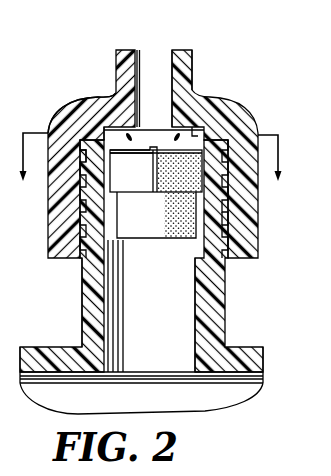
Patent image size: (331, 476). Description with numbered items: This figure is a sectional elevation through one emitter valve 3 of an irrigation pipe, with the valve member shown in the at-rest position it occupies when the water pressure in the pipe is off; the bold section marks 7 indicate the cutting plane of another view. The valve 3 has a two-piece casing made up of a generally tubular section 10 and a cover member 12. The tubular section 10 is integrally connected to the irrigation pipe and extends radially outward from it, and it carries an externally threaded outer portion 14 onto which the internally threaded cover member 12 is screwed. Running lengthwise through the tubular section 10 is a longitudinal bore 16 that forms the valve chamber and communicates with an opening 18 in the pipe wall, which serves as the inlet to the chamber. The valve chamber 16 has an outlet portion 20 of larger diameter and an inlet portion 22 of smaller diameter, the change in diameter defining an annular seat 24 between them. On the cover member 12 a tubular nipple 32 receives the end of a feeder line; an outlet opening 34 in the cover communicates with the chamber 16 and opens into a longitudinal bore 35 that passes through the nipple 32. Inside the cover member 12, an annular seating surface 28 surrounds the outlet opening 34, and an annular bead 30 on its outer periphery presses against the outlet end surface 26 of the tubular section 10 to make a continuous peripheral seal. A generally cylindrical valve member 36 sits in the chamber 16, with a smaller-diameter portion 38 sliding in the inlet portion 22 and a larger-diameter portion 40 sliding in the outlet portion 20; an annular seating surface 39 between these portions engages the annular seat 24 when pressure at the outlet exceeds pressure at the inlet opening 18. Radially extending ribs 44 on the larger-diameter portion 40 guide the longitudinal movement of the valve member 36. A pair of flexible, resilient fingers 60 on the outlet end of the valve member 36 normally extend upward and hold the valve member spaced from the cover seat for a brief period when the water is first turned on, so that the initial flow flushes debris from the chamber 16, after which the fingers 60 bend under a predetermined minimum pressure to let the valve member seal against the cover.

The valve 3 is at (236, 78).
The section line 7- 7 is at (159, 182).
The tubular section 10 is at (81, 305).
The cover member 12 is at (231, 110).
The externally threaded outer portion 14 is at (253, 247).
The longitudinal bore 16 is at (160, 315).
The opening 18 is at (141, 393).
The outlet portion 20 is at (198, 130).
The inlet portion 22 is at (133, 265).
The annular seat 24 is at (193, 216).
The outlet end surface 26 is at (98, 135).
The annular seating surface 28 is at (117, 150).
The annular bead 30 is at (127, 150).
The tubular nipple 32 is at (191, 57).
The outlet opening 34 is at (171, 48).
The longitudinal bore 35 is at (141, 50).
The valve member 36 is at (207, 217).
The smaller-diameter portion 38 is at (173, 238).
The annular seating surface 39 is at (126, 180).
The larger-diameter portion 40 is at (72, 129).
The ribs 44 is at (156, 169).
The resilient fingers 60 is at (175, 134).